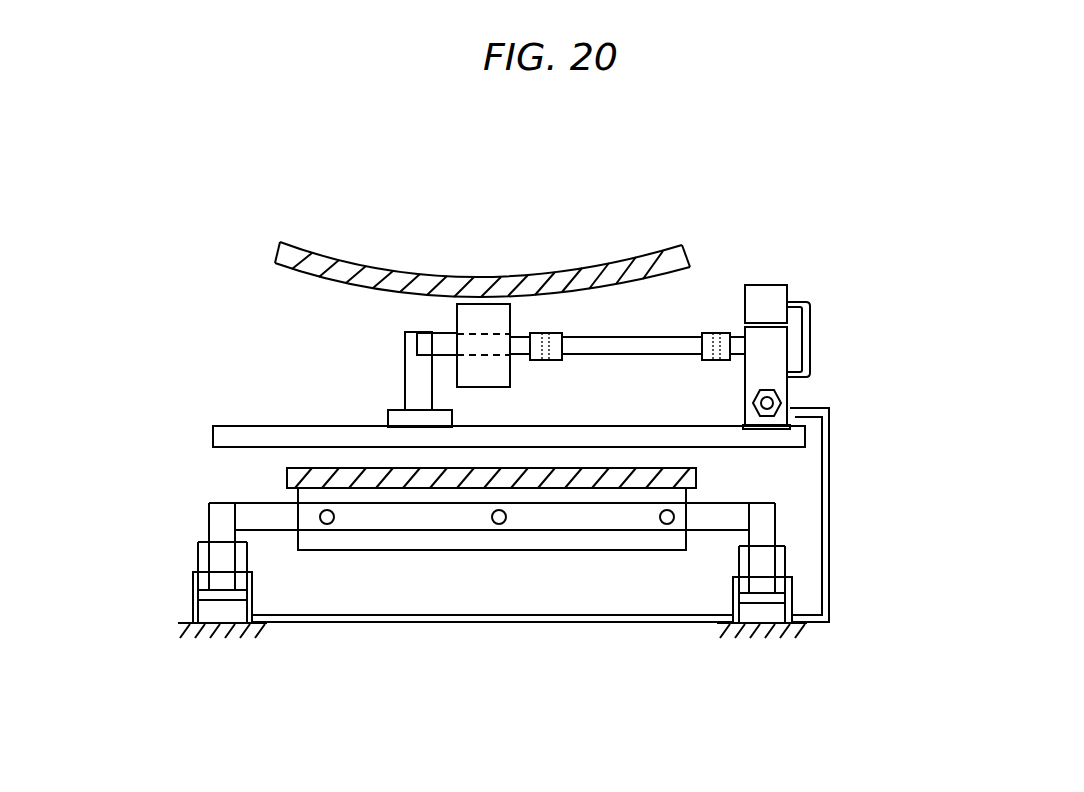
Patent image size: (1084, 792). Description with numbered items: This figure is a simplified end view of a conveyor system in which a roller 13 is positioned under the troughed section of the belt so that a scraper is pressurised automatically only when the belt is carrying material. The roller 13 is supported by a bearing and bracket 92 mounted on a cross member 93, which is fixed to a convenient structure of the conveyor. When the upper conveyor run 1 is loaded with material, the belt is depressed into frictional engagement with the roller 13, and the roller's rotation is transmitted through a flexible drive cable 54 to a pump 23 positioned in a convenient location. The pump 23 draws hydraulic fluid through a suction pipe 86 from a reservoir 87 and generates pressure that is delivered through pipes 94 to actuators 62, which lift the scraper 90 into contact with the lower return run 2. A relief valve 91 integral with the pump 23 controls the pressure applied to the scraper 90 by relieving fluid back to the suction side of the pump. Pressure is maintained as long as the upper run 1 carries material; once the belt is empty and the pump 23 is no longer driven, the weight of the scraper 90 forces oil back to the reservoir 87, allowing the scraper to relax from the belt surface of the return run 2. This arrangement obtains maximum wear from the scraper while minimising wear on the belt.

The upper conveyor run 1 is at (483, 273).
The lower return run 2 is at (285, 479).
The roller 13 is at (455, 317).
The pump 23 is at (790, 387).
The flexible drive cable 54 is at (688, 332).
The actuators 62 is at (192, 581).
The suction pipe 86 is at (813, 308).
The reservoir 87 is at (787, 287).
The scraper 90 is at (492, 542).
The relief valve 91 is at (780, 410).
The bearing and bracket 92 is at (403, 383).
The cross member 93 is at (210, 434).
The pipes 94 is at (830, 535).